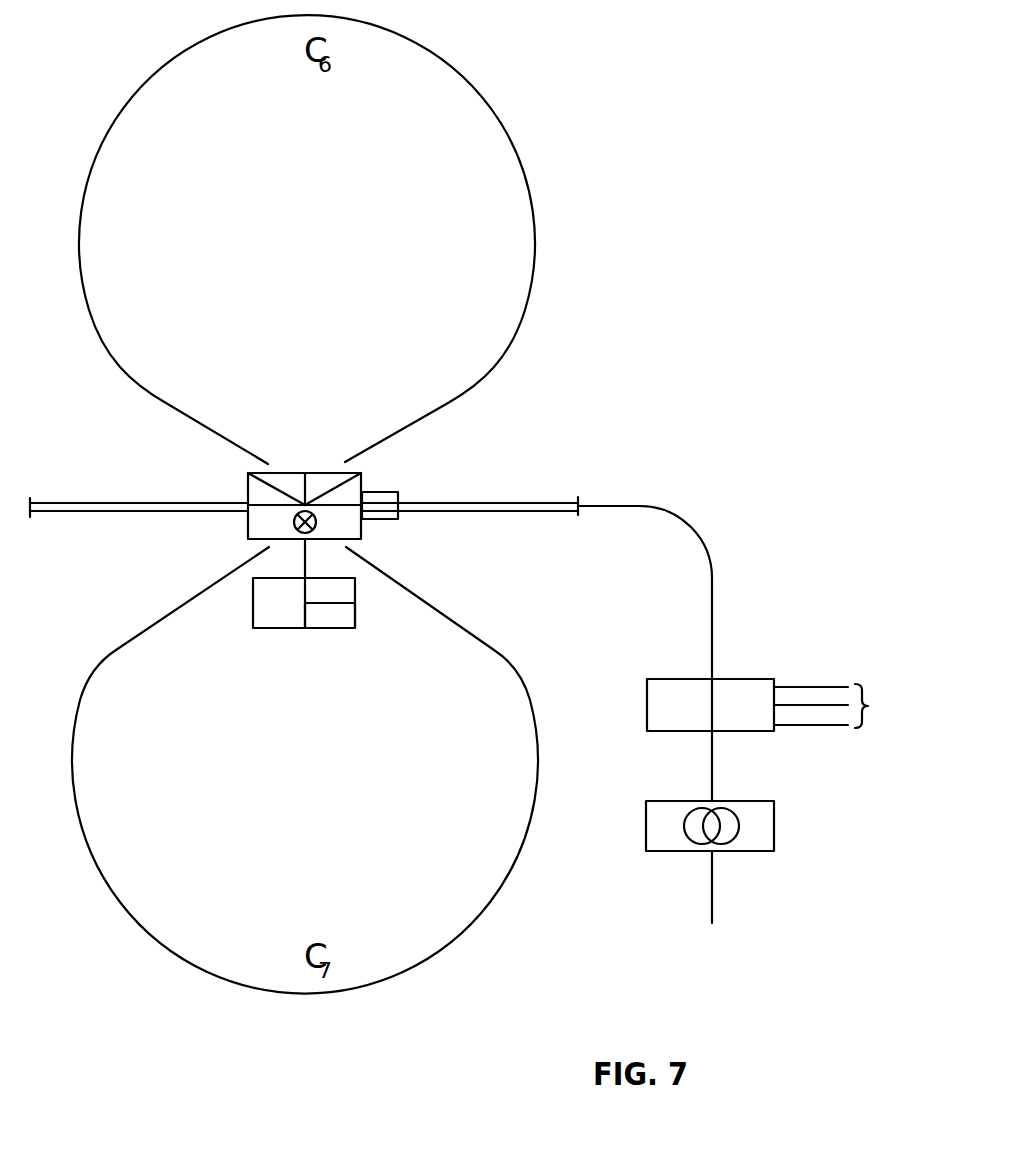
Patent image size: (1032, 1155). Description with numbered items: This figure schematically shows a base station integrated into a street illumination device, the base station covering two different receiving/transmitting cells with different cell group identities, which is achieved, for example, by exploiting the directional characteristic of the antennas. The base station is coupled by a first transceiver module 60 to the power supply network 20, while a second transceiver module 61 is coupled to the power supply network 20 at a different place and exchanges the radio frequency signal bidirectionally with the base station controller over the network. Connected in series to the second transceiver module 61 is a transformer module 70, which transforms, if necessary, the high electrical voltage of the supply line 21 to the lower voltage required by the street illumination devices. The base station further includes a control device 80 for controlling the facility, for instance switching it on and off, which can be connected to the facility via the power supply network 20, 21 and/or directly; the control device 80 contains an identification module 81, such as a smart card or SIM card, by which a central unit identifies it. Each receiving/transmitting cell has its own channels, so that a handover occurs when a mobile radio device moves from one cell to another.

The power supply network 20 is at (666, 506).
The supply line 21 is at (712, 902).
The first transceiver module 60 is at (378, 498).
The second transceiver module 61 is at (742, 702).
The transformer module 70 is at (747, 817).
The control device 80 is at (278, 617).
The identification module 81 is at (336, 620).